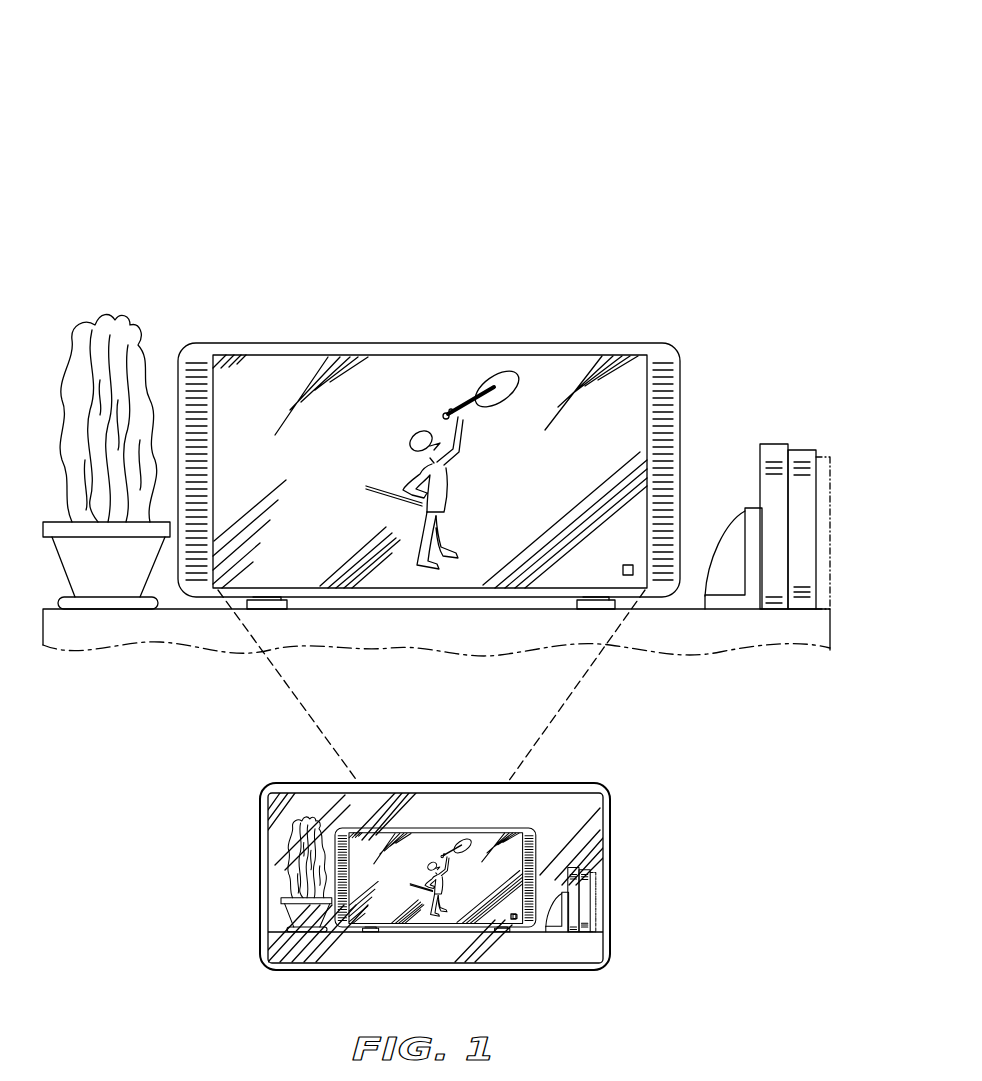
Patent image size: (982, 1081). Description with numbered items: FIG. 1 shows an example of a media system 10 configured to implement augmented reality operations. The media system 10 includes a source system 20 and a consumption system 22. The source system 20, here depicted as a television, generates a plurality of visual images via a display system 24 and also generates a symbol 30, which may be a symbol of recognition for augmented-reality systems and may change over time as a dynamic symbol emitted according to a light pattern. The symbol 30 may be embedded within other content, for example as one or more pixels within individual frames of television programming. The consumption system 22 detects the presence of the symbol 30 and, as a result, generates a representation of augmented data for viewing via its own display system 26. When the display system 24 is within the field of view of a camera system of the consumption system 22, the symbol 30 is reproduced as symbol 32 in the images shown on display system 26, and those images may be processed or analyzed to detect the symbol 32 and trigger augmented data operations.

The media system 10 is at (748, 102).
The source system 20 is at (682, 382).
The consumption system 22 is at (610, 850).
The display system 24 is at (318, 355).
The display system 26 is at (547, 793).
The symbol 30 is at (622, 568).
The symbol 32 is at (514, 920).